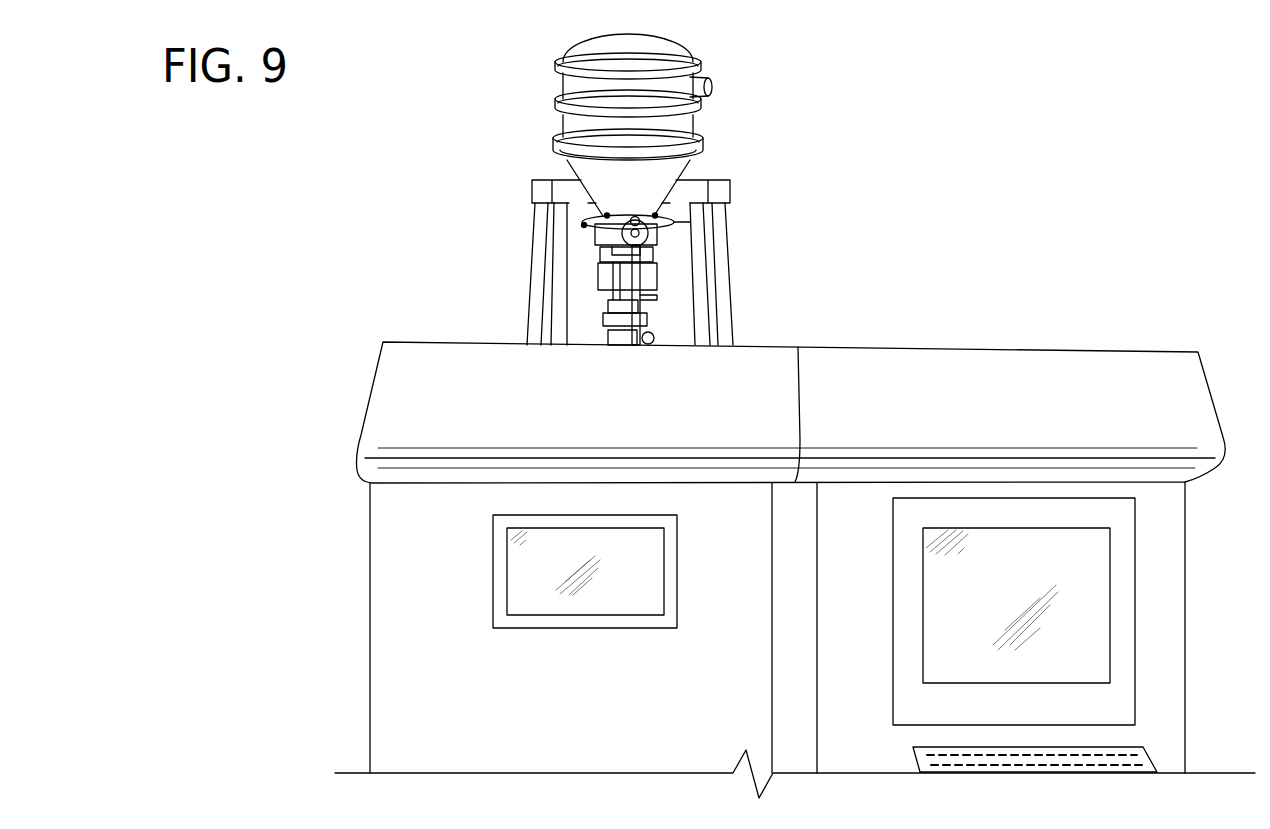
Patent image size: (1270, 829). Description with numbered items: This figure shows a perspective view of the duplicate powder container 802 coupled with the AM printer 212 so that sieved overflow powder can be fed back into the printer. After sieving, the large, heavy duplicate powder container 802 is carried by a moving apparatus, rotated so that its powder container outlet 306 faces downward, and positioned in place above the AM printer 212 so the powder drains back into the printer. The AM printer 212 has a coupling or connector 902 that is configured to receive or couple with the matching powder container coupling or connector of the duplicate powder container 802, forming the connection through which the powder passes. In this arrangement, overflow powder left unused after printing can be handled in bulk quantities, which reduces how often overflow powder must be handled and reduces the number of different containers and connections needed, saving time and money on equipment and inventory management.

The duplicate powder container 802 is at (683, 50).
The powder container outlet 306 is at (622, 243).
The coupling or connector 902 is at (598, 273).
The AM printer 212 is at (1030, 375).